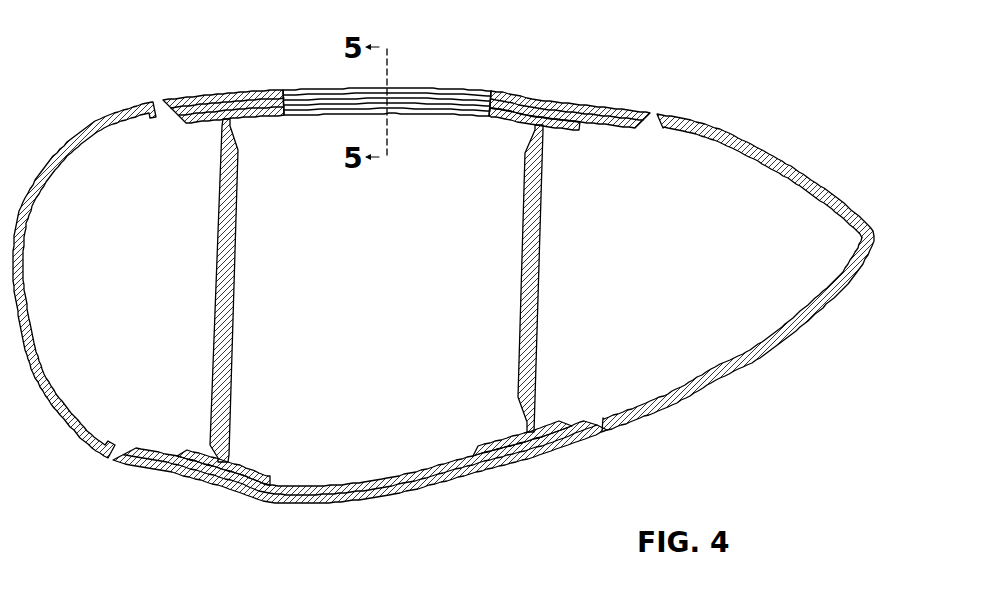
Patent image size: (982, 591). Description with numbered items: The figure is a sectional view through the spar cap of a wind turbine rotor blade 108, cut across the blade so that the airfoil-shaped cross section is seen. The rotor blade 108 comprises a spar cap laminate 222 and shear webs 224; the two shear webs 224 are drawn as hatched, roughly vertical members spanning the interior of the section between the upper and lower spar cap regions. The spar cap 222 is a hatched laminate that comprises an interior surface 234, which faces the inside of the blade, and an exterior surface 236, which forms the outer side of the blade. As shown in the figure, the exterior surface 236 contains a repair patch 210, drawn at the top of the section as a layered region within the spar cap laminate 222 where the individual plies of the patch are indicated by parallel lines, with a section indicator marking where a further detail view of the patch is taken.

The wind turbine rotor blade 108 is at (511, 472).
The repair patch 210 is at (457, 63).
The spar cap laminate 222 is at (631, 99).
The shear webs 224 is at (235, 304).
The interior surface 234 is at (111, 141).
The exterior surface 236 is at (209, 96).